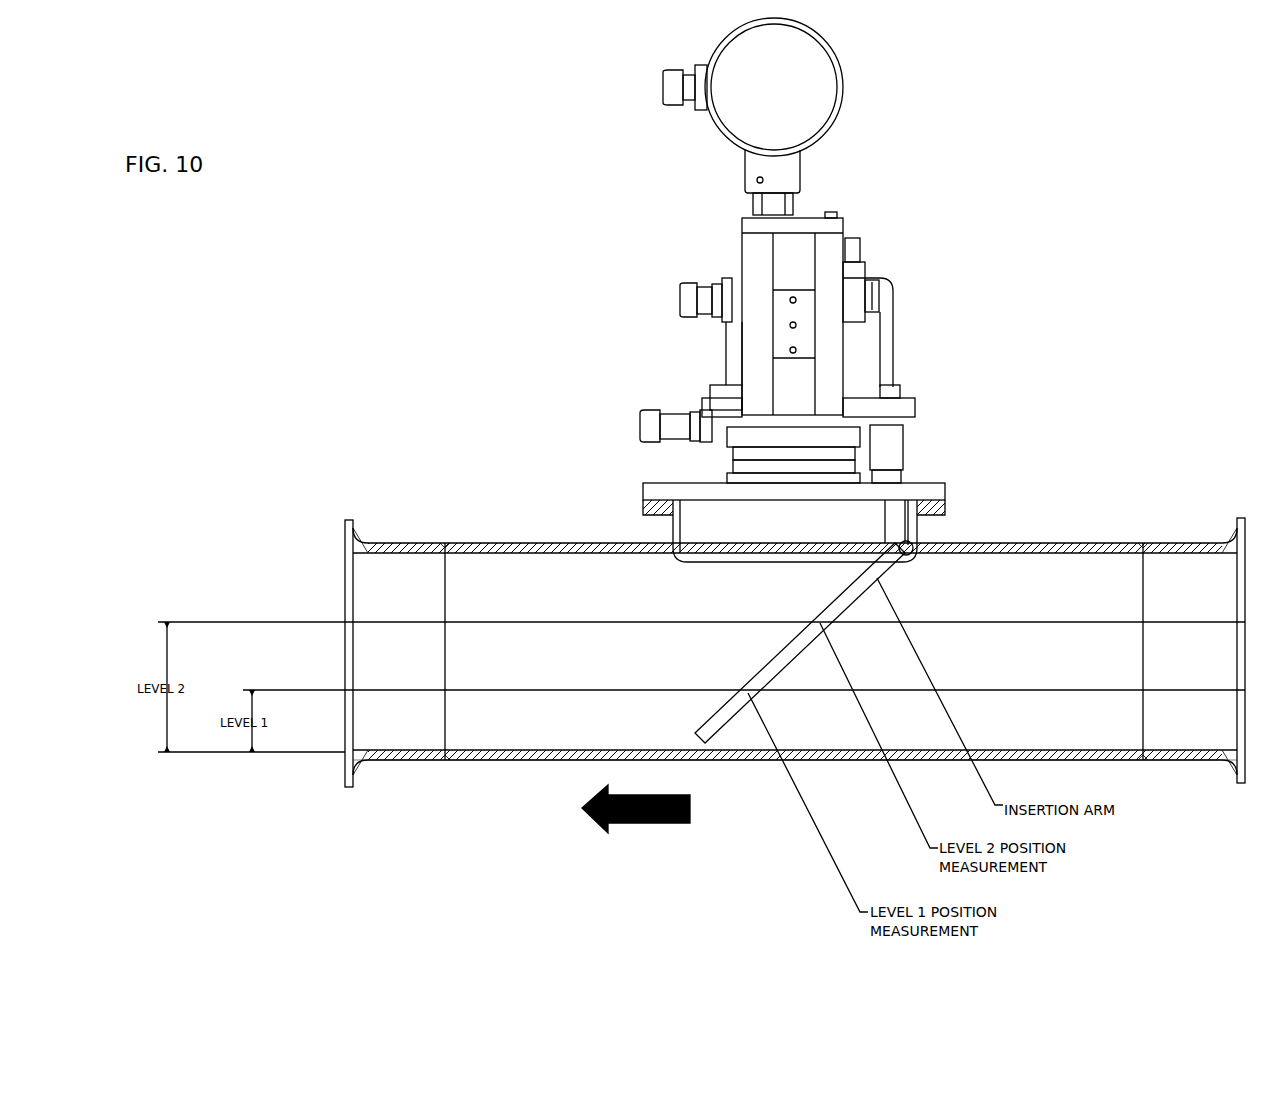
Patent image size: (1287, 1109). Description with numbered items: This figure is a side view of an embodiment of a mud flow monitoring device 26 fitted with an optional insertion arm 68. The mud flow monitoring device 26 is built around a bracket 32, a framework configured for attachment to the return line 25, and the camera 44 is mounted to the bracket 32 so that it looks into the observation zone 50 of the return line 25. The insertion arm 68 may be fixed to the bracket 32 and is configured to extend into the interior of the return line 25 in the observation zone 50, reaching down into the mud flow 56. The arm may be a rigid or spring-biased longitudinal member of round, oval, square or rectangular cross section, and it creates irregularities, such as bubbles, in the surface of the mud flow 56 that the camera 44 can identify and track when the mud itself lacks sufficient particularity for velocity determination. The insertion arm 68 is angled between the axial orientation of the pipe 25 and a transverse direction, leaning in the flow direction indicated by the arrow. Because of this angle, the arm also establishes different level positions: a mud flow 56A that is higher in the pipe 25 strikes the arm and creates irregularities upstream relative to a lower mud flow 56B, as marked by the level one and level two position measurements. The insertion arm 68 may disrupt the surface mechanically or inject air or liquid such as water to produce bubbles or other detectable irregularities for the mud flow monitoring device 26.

The return line 25 is at (1068, 543).
The mud flow monitoring device 26 is at (898, 268).
The bracket 32 is at (928, 487).
The camera 44 is at (830, 380).
The observation zone 50 is at (658, 591).
The mud flow 56 is at (795, 788).
The higher mud flow 56A is at (701, 656).
The lower mud flow 56B is at (355, 733).
The insertion arm 68 is at (892, 545).